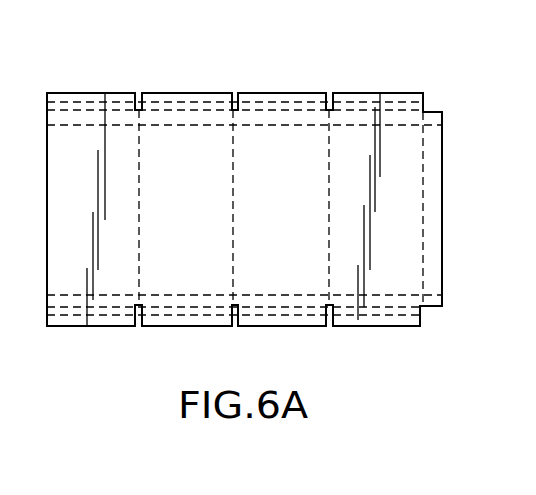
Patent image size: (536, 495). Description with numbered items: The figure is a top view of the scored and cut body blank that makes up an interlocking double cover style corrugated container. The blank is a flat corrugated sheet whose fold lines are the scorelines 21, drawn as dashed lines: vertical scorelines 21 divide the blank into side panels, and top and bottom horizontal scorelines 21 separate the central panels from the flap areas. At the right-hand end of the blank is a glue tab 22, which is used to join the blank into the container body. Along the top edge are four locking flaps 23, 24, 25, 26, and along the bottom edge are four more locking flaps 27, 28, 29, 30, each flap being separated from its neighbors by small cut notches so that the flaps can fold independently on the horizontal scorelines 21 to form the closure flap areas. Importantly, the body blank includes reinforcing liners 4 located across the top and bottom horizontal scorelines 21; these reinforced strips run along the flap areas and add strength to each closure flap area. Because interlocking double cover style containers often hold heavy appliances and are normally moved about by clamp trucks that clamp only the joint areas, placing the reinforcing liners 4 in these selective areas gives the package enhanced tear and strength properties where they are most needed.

The reinforcing liner 4 is at (423, 103).
The scorelines 21 is at (233, 237).
The glue tab 22 is at (437, 178).
The locking flap 23 is at (83, 98).
The locking flap 24 is at (180, 97).
The locking flap 25 is at (277, 97).
The locking flap 26 is at (368, 97).
The locking flap 27 is at (102, 322).
The locking flap 28 is at (193, 322).
The locking flap 29 is at (282, 320).
The locking flap 30 is at (377, 323).